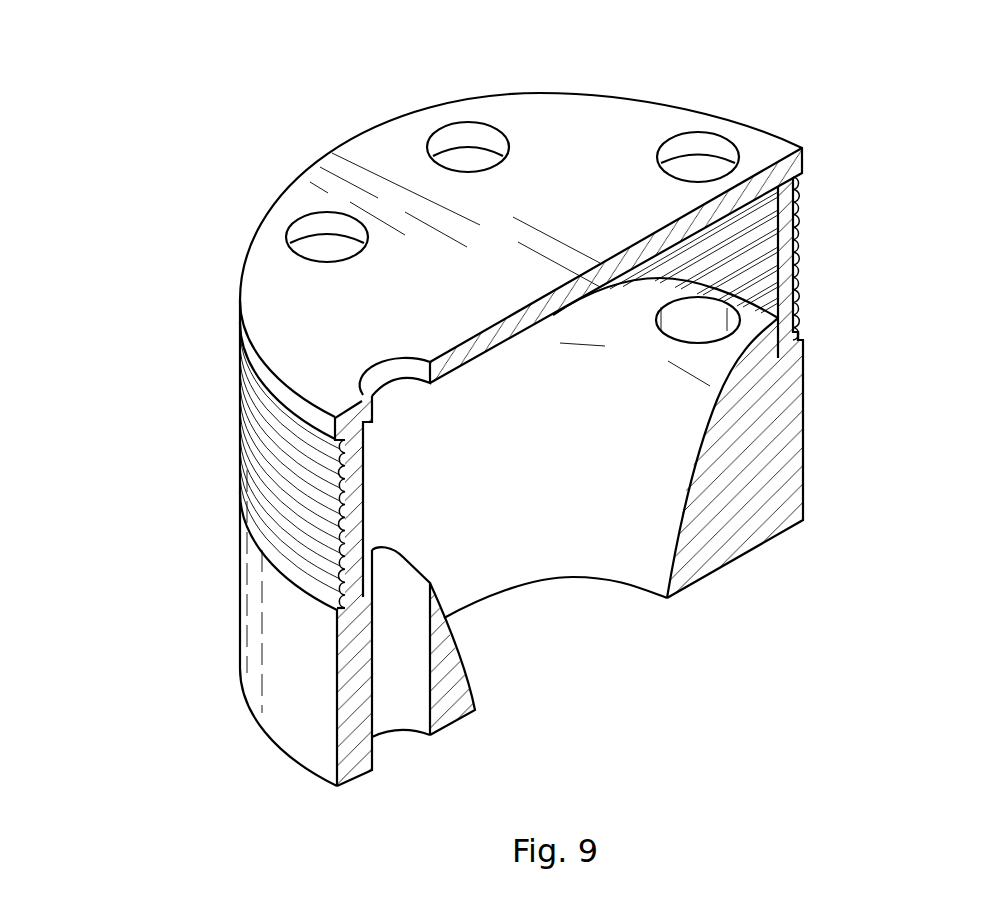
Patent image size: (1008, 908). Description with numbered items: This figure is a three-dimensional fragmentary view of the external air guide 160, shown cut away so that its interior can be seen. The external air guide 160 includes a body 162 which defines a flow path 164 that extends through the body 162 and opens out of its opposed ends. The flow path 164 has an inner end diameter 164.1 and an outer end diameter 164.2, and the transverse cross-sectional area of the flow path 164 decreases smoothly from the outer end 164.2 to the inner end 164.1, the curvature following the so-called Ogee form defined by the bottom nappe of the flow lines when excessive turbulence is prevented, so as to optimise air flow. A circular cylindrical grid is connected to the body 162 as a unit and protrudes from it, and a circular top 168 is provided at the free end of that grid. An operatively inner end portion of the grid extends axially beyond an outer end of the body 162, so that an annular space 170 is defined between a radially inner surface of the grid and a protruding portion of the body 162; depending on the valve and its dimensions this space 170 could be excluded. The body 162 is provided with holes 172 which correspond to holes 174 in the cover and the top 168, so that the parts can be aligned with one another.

The shielding and pressure pass-through assembly 160 is at (128, 127).
The outer cup housing 162 is at (235, 747).
The inner sleeve insert 164 is at (597, 580).
The lower section of inner sleeve 164.1 is at (470, 603).
The upper shoulder of inner sleeve 164.2 is at (648, 280).
The top plate 168 is at (507, 123).
The stop shoulder 170 is at (785, 342).
The thread 172 is at (697, 323).
The hole 174 is at (310, 247).